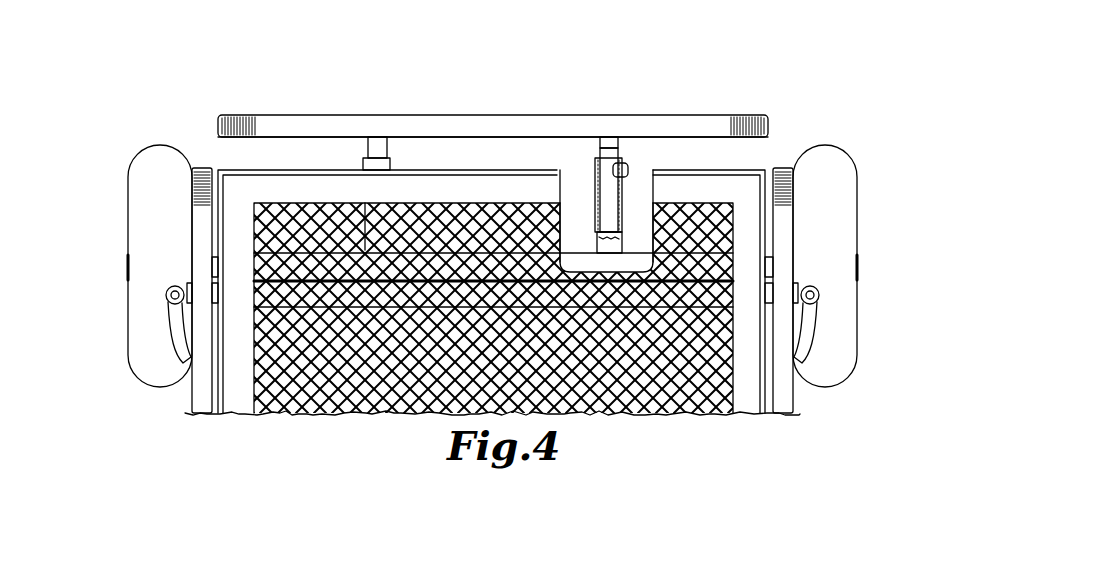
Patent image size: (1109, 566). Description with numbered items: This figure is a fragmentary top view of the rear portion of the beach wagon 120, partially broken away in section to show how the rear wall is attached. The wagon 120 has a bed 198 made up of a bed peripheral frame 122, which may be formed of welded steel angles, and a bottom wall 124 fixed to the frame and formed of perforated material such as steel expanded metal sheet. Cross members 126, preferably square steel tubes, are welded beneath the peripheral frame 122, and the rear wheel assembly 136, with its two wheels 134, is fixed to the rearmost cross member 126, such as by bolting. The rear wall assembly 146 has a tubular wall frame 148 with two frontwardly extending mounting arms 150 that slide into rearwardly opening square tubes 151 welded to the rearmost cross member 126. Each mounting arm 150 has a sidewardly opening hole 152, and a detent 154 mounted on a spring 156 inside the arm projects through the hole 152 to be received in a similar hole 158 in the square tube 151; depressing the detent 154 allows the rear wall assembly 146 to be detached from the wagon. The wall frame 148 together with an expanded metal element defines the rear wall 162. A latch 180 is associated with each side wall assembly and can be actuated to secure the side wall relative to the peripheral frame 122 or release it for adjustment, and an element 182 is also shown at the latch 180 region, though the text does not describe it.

The beach wagon 120 is at (252, 80).
The bed peripheral frame 122 is at (232, 170).
The bottom wall 124 is at (660, 415).
The cross members 126 is at (296, 300).
The wheels 134 is at (128, 318).
The rear wheel assembly 136 is at (128, 215).
The rear wall assembly 146 is at (553, 114).
The tubular wall frame 148 is at (317, 114).
The mounting arms 150 is at (370, 147).
The rearwardly opening square tubes 151 is at (392, 165).
The sidewardly opening hole 152 is at (600, 160).
The detent 154 is at (629, 170).
The spring 156 is at (597, 207).
The hole 158 is at (652, 178).
The rear wall 162 is at (463, 114).
The latch 180 is at (166, 295).
The latch lever 182 is at (177, 352).
The bed 198 is at (397, 413).